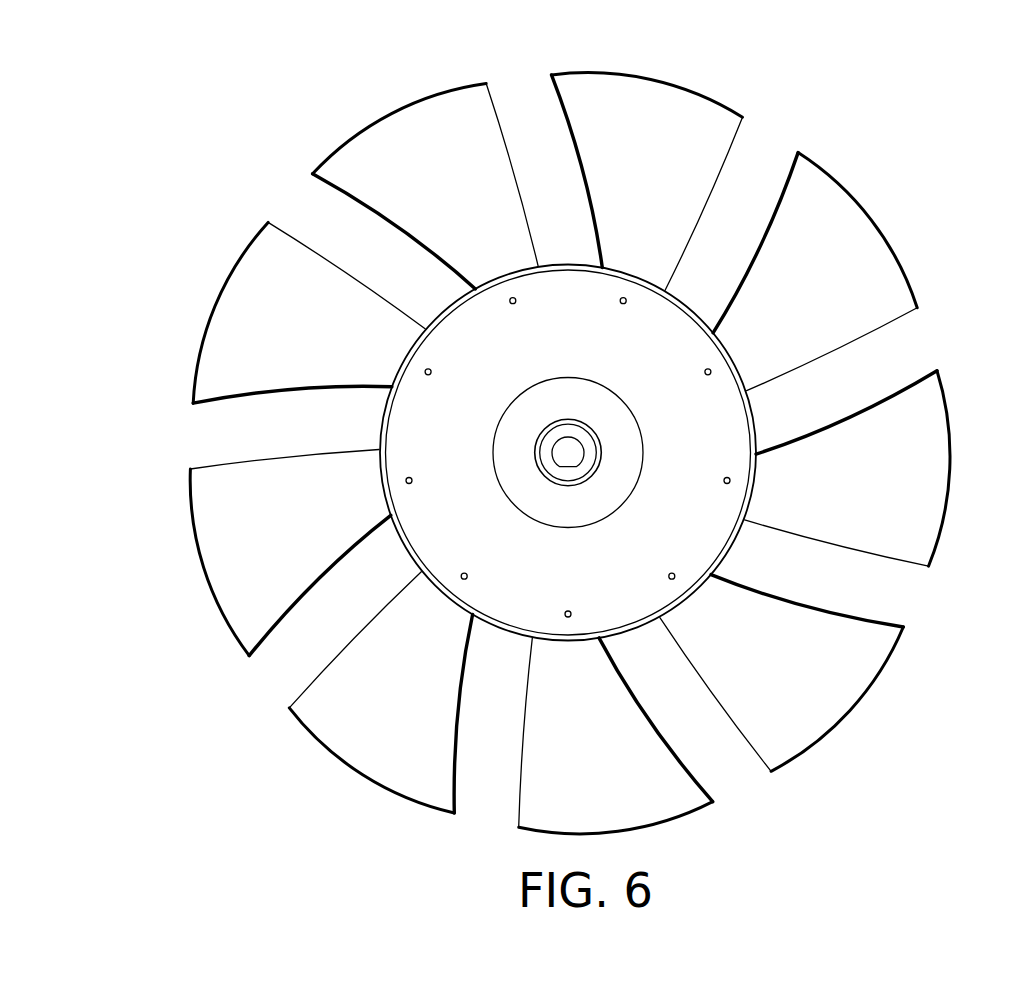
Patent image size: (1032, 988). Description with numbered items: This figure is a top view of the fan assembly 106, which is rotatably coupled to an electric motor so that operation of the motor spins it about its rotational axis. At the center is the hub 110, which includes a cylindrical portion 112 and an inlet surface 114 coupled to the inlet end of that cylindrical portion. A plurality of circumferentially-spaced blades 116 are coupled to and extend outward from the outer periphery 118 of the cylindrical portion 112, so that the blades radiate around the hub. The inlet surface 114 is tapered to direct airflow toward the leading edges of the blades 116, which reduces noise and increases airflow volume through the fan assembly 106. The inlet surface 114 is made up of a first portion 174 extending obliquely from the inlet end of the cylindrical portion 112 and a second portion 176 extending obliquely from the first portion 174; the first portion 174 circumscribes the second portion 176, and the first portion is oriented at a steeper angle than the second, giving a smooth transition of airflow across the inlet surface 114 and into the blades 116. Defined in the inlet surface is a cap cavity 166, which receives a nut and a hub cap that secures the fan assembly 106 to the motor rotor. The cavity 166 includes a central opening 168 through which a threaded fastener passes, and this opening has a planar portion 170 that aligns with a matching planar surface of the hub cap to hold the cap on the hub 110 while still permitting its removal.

The fan assembly 106 is at (74, 90).
The hub 110 is at (418, 284).
The cylindrical portion 112 is at (561, 230).
The inlet surface 114 is at (704, 452).
The blades 116 is at (823, 232).
The outer periphery 118 is at (748, 203).
The cap cavity 166 is at (343, 440).
The central opening 168 is at (352, 375).
The planar portion 170 is at (683, 638).
The first portion 174 is at (709, 459).
The second portion 176 is at (733, 562).